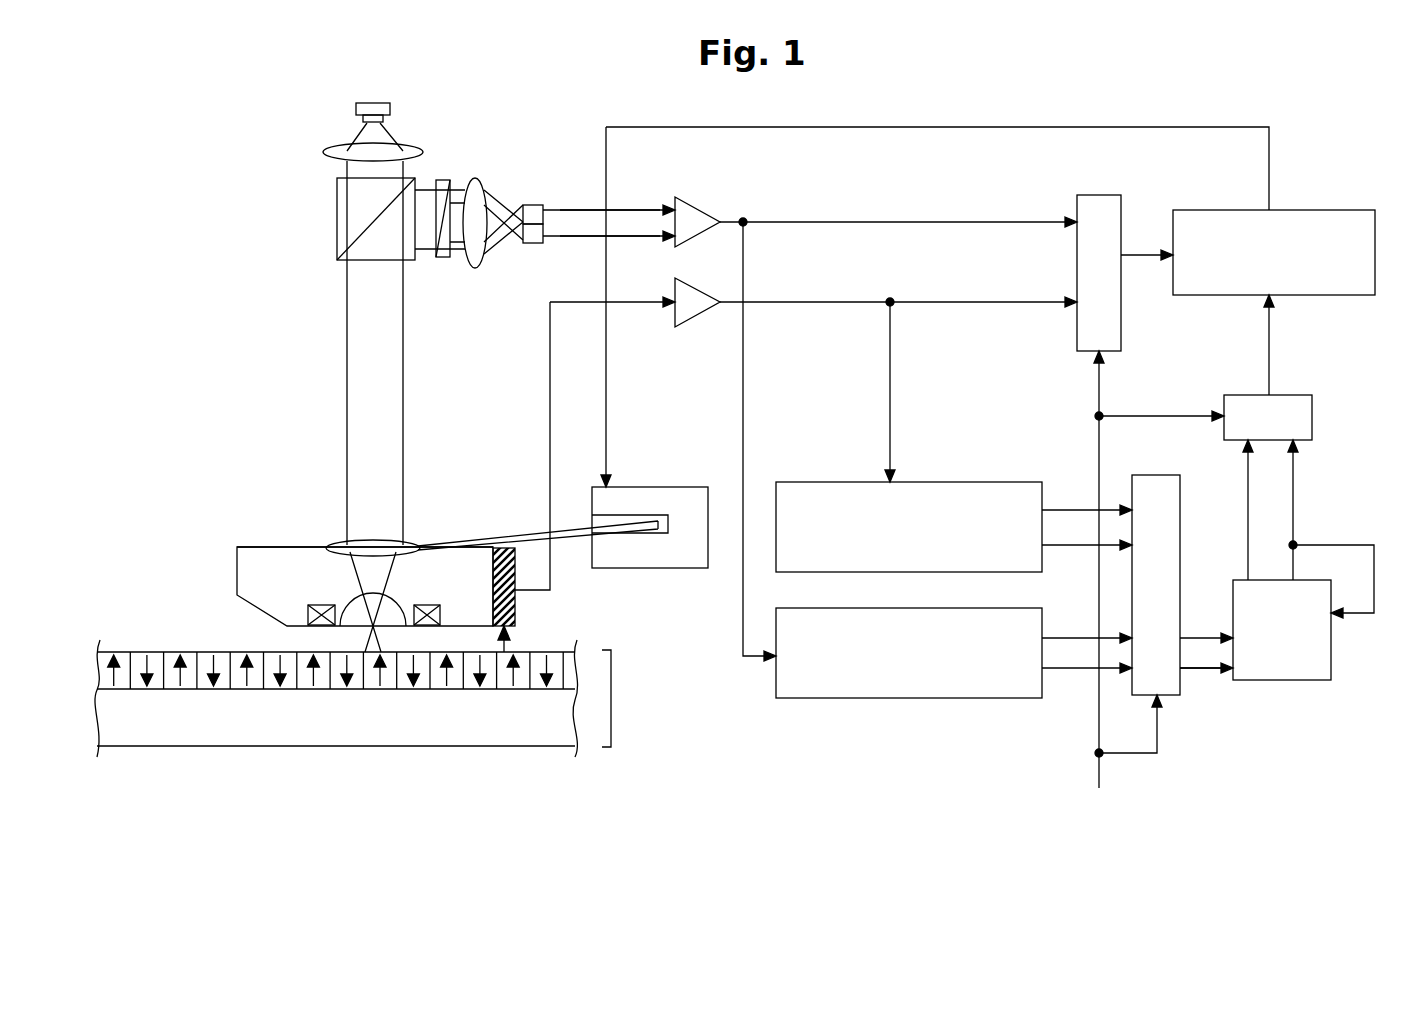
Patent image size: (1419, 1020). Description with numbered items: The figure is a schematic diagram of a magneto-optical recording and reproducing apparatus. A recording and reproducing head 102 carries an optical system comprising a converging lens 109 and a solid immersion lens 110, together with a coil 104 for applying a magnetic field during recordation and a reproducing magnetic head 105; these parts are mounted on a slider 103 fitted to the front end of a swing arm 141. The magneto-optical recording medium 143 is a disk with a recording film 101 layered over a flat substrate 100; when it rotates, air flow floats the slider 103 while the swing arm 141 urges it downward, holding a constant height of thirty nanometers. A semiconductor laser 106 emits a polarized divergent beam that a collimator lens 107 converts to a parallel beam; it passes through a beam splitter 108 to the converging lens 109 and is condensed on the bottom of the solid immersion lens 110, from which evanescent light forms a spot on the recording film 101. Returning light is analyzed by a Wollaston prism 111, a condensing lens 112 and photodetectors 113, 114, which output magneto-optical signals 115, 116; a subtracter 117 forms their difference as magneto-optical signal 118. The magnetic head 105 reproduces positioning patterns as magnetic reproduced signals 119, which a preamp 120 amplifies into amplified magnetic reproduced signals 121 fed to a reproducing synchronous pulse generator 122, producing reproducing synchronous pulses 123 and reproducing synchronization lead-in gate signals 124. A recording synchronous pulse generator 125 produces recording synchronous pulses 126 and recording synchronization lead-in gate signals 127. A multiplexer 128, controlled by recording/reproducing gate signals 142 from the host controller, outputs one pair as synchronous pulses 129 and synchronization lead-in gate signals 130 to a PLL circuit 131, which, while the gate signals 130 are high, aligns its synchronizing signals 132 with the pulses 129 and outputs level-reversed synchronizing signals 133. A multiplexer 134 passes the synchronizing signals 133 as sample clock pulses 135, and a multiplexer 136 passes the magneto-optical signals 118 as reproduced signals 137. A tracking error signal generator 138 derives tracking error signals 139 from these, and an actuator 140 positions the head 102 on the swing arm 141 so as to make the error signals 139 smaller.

The flat substrate 100 is at (212, 740).
The recording film 101 is at (178, 612).
The recording and reproducing head 102 is at (258, 547).
The slider 103 is at (237, 580).
The coil 104 is at (315, 605).
The reproducing magnetic head 105 is at (515, 610).
The semiconductor laser 106 is at (356, 104).
The collimator lens 107 is at (325, 153).
The beam splitter 108 is at (337, 218).
The converging lens 109 is at (340, 545).
The solid immersion lens 110 is at (395, 618).
The Wollaston prism 111 is at (441, 180).
The condensing lens 112 is at (480, 181).
The photodetector 113 is at (533, 206).
The photodetector 114 is at (534, 244).
The magneto-optical signal 115 is at (630, 209).
The magneto-optical signal 116 is at (630, 237).
The subtracter 117 is at (682, 195).
The magneto-optical signal 118 is at (890, 221).
The magnetic reproduced signal 119 is at (550, 360).
The preamp 120 is at (678, 322).
The amplified magnetic reproduced signal 121 is at (975, 300).
The reproducing synchronous pulse generator 122 is at (800, 482).
The reproducing synchronous pulse 123 is at (1060, 509).
The reproducing synchronization lead-in gate signal 124 is at (1068, 546).
The recording synchronous pulse generator 125 is at (848, 698).
The recording synchronous pulse 126 is at (1068, 638).
The recording synchronization lead-in gate signal 127 is at (1068, 669).
The multiplexer 128 is at (1172, 697).
The synchronous pulse 129 is at (1192, 637).
The synchronization lead-in gate signal 130 is at (1205, 669).
The synchronizing signal generator (PLL circuit) 131 is at (1302, 681).
The synchronizing signal 132 is at (1335, 545).
The synchronizing signal 133 is at (1248, 506).
The multiplexer 134 is at (1312, 418).
The sample clock pulse 135 is at (1270, 340).
The multiplexer 136 is at (1100, 195).
The reproduced signal 137 is at (1140, 256).
The tracking error signal generator 138 is at (1245, 210).
The tracking error signal 139 is at (790, 128).
The actuator 140 is at (620, 569).
The swing arm 141 is at (535, 528).
The recording/reproducing gate signal 142 is at (1120, 754).
The magneto-optical recording medium 143 is at (611, 735).